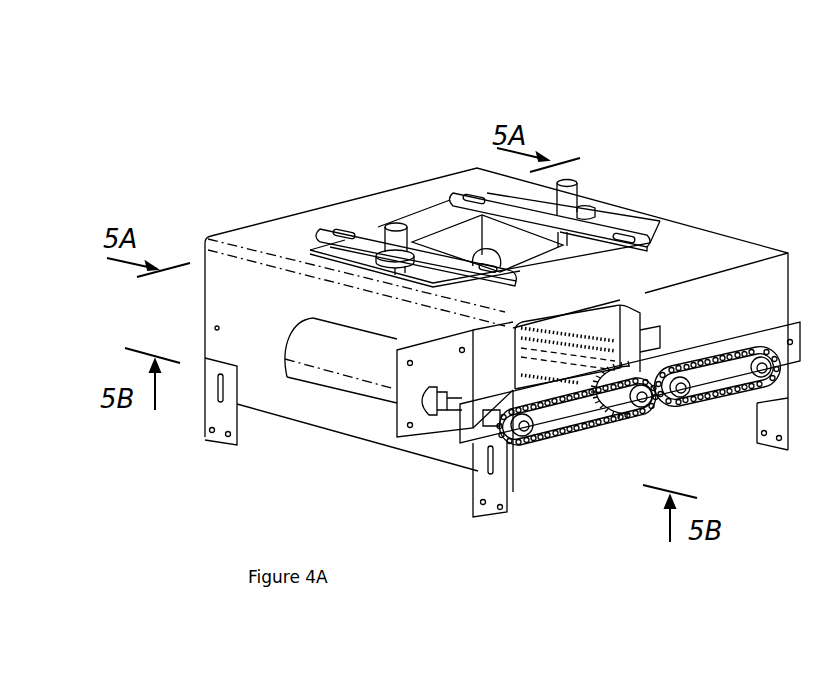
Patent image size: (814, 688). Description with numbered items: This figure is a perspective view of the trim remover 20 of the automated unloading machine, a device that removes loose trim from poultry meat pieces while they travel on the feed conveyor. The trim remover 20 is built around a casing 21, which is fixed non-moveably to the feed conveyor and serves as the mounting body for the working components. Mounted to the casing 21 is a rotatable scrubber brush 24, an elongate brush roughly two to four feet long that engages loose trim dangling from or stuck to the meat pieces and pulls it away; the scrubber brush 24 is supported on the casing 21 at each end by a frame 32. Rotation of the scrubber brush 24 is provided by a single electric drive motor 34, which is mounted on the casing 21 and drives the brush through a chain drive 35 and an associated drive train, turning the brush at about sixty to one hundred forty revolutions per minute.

The trim remover 20 is at (697, 226).
The casing 21 is at (295, 232).
The scrubber brush 24 is at (588, 334).
The frame 32 is at (633, 318).
The electric drive motor 34 is at (337, 383).
The chain drive 35 is at (570, 438).